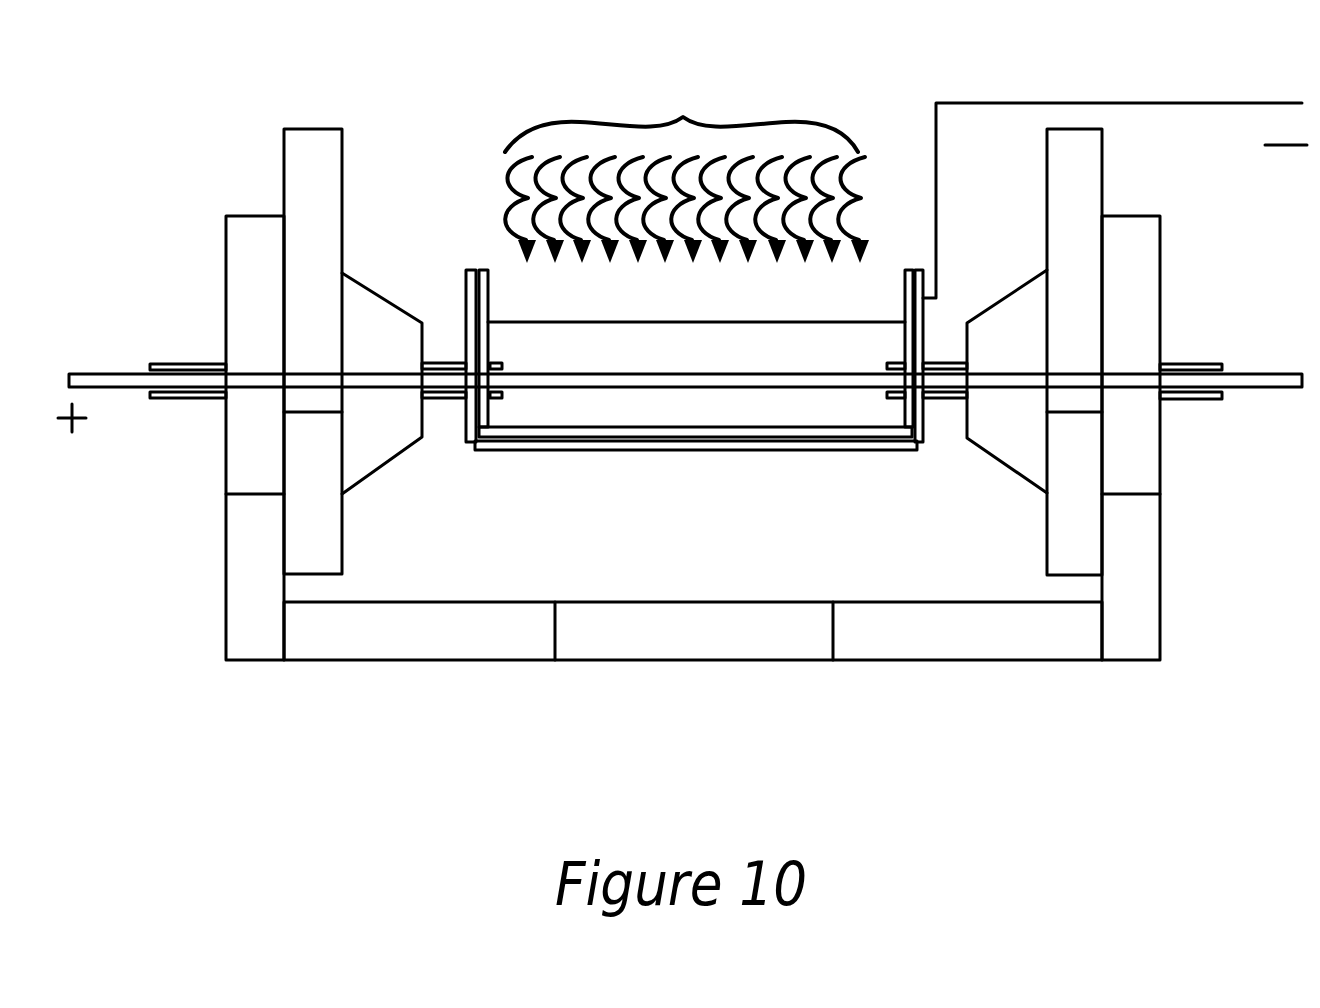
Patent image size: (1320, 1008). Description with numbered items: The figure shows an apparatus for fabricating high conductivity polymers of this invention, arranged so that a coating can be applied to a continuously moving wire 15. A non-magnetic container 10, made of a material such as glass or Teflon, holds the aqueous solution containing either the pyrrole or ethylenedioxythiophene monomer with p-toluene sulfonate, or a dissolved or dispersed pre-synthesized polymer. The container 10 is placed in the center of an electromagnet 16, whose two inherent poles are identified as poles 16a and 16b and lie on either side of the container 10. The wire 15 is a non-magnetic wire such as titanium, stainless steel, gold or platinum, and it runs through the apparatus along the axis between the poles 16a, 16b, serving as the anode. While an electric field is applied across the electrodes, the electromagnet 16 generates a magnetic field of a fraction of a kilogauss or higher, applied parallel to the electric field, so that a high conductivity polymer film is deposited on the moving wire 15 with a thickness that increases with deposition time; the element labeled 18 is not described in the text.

The non-magnetic container 10 is at (463, 290).
The continuously moving wire 15 is at (122, 385).
The electromagnet 16 is at (880, 630).
The pole of the electromagnet 16a is at (1018, 455).
The pole of the electromagnet 16b is at (367, 455).
The radiation 18 is at (683, 117).